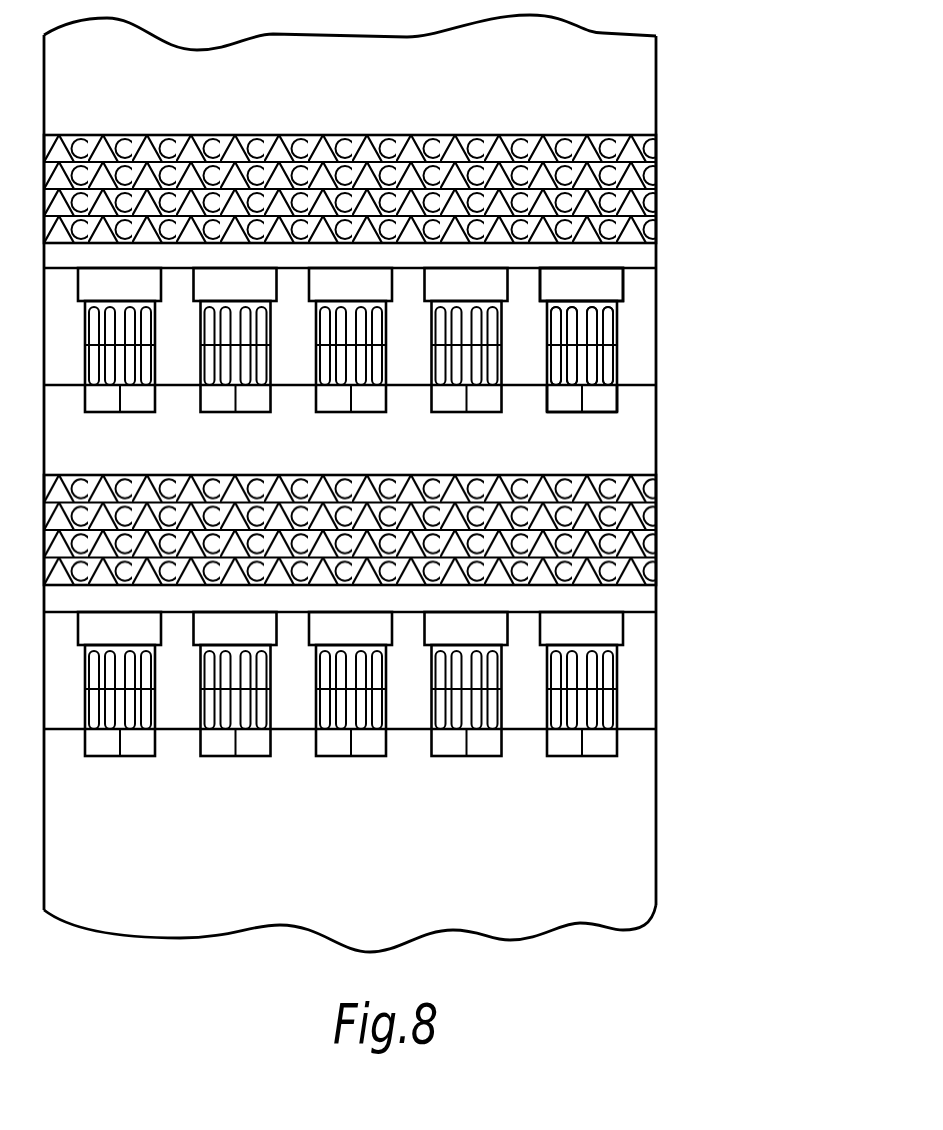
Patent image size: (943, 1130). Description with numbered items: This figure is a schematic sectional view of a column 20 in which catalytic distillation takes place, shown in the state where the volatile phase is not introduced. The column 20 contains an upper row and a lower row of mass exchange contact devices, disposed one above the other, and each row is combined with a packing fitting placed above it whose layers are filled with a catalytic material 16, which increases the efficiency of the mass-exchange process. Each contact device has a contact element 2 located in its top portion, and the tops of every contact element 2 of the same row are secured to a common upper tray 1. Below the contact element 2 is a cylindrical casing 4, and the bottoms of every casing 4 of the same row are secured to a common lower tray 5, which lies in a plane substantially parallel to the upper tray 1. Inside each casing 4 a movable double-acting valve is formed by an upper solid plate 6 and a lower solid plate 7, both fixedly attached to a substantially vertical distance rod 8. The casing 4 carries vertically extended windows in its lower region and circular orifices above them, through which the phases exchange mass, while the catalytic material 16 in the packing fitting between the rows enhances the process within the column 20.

The catalytic material 16 is at (656, 183).
The upper tray 1 is at (635, 267).
The cylindrical casing 4 is at (656, 287).
The upper solid plate 6 is at (615, 342).
The lower tray 5 is at (656, 383).
The distance rod 8 is at (585, 392).
The lower solid plate 7 is at (613, 413).
The contact element 2 is at (612, 608).
The column 20 is at (656, 715).